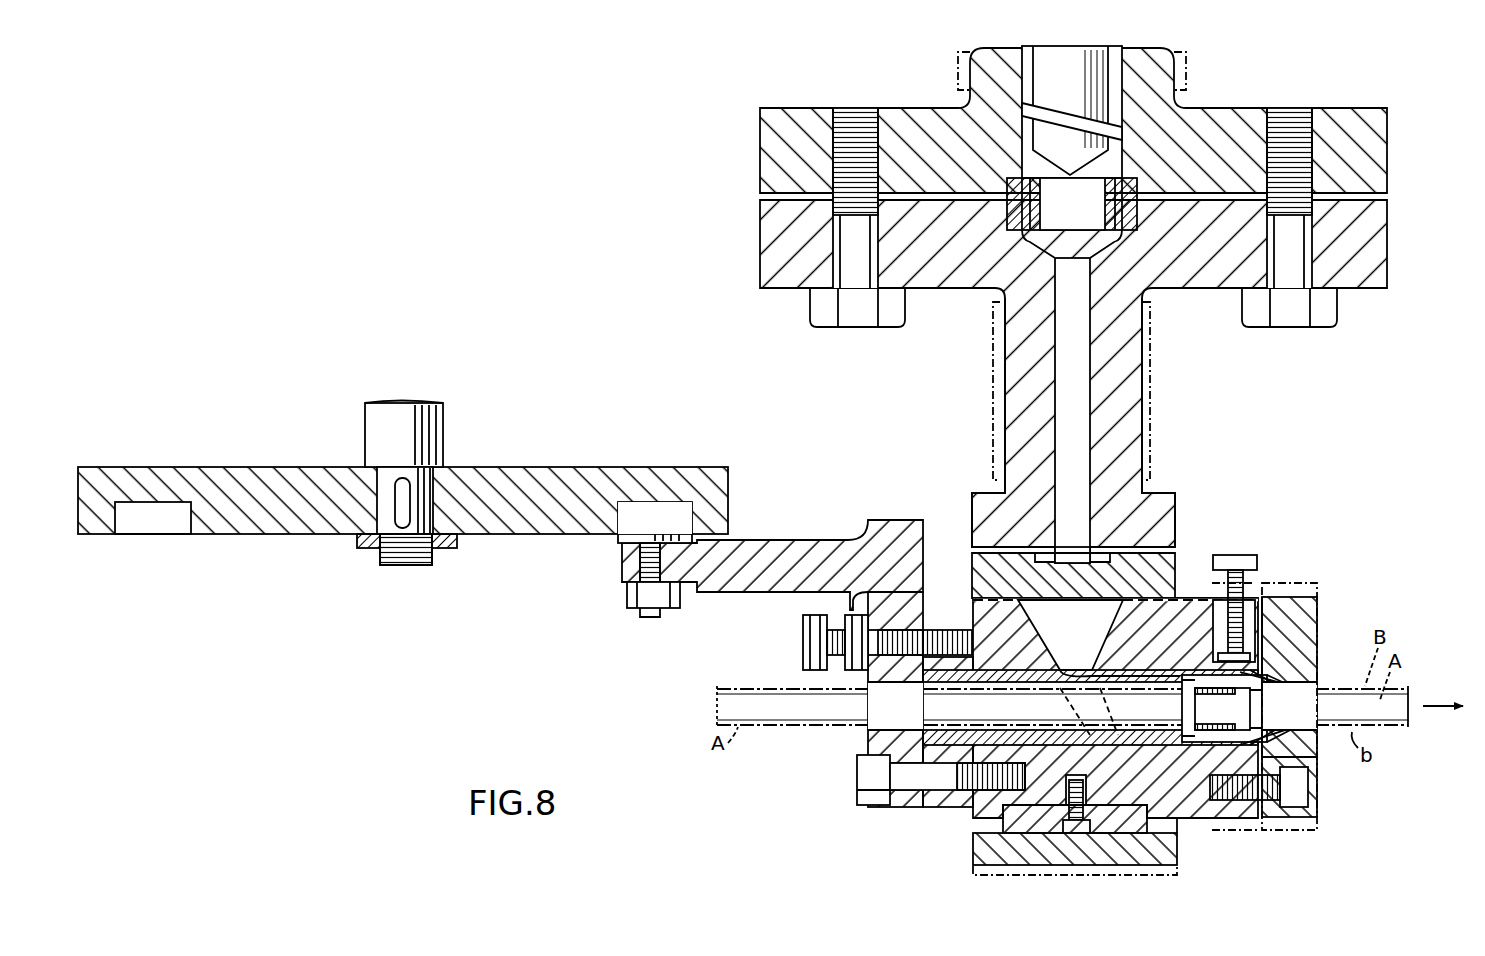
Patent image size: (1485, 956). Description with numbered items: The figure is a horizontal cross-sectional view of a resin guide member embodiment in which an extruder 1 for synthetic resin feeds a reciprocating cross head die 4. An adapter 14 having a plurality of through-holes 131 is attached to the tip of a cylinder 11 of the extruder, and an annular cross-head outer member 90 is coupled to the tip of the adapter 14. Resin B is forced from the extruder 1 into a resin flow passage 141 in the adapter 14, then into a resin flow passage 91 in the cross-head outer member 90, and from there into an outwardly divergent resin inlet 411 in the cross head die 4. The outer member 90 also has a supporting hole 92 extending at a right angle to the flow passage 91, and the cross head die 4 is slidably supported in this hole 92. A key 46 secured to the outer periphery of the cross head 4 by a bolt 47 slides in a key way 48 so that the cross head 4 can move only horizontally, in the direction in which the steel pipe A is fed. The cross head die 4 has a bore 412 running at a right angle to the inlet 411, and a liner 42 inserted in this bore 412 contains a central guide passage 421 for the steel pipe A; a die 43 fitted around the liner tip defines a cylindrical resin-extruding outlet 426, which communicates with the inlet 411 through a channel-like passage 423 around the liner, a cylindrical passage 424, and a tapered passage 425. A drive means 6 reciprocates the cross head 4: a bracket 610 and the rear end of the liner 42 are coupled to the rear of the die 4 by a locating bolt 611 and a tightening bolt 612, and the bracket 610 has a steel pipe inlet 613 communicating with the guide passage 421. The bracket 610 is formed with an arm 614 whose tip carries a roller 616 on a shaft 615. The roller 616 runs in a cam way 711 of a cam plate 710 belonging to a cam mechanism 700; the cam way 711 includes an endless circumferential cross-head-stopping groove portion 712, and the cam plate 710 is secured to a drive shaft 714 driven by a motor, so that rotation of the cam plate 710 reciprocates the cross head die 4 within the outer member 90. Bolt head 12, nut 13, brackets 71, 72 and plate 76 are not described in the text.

The extruder 1 is at (1073, 279).
The cylinder 11 is at (985, 72).
The socket head bolt 12 is at (1052, 55).
The nut 13 is at (1130, 186).
The through-holes 131 is at (1028, 242).
The adapter 14 is at (1085, 411).
The resin flow passage 141 is at (1088, 396).
The bracket 71 is at (1188, 80).
The bracket 72 is at (1158, 424).
The cross-head outer member 90 is at (1165, 592).
The resin flow passage 91 is at (1075, 565).
The supporting hole 92 is at (1180, 597).
The resin inlet 411 is at (1040, 600).
The bore 412 is at (1022, 655).
The guide passage 421 is at (1062, 706).
The channel-like passage 423 is at (1062, 672).
The cylindrical passage 424 is at (1160, 744).
The tapered passage 425 is at (1289, 677).
The resin-extruding outlet 426 is at (1270, 688).
The die 43 is at (1282, 690).
The liner 42 is at (1062, 720).
The key 46 is at (1126, 810).
The bolt 47 is at (1082, 816).
The key way 48 is at (1172, 830).
The cross head die 4 is at (1263, 722).
The bottom plate 76 is at (1140, 878).
The drive means 6 is at (650, 630).
The bracket 610 is at (898, 808).
The locating bolt 611 is at (808, 646).
The tightening bolt 612 is at (857, 776).
The steel pipe inlet 613 is at (882, 718).
The arm 614 is at (780, 544).
The shaft 615 is at (628, 578).
The roller 616 is at (630, 508).
The cam mechanism 700 is at (416, 568).
The cam plate 710 is at (403, 526).
The cam way 711 is at (178, 520).
The cross-head-stopping groove portion 712 is at (128, 535).
The drive shaft 714 is at (368, 437).